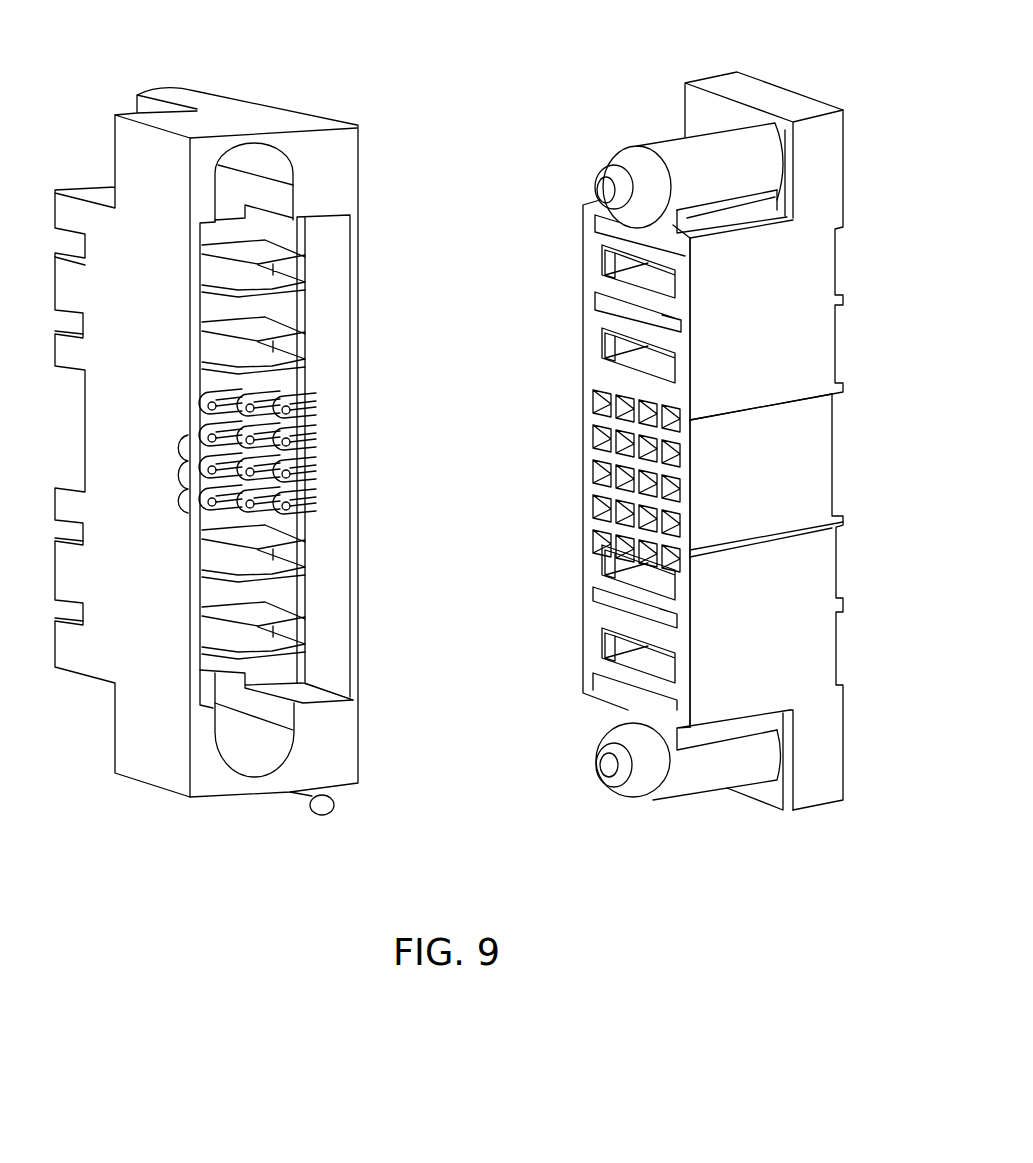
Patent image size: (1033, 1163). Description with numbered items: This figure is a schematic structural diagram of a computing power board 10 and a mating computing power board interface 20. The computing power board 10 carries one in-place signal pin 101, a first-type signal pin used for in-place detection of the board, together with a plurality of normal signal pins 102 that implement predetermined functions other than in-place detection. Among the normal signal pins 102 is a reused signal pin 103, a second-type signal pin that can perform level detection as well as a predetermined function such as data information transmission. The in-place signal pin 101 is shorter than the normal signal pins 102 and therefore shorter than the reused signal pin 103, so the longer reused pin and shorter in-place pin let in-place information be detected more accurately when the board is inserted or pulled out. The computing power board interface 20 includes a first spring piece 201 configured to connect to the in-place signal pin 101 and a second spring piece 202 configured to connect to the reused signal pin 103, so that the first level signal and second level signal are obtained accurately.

The computing power board 10 is at (338, 160).
The in-place signal pin 101 is at (200, 405).
The normal signal pins 102 is at (173, 467).
The reused signal pin 103 is at (317, 477).
The computing power board interface 20 is at (760, 127).
The first spring piece 201 is at (673, 435).
The second spring piece 202 is at (597, 463).